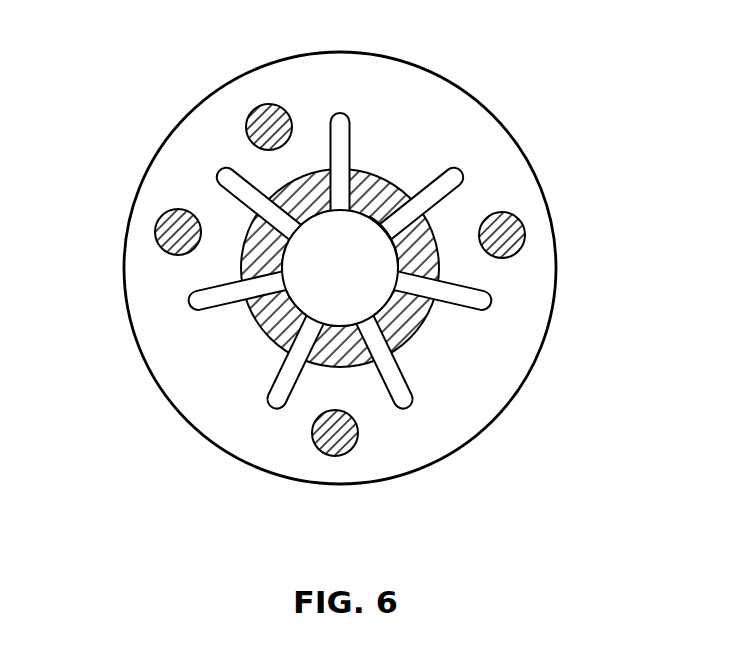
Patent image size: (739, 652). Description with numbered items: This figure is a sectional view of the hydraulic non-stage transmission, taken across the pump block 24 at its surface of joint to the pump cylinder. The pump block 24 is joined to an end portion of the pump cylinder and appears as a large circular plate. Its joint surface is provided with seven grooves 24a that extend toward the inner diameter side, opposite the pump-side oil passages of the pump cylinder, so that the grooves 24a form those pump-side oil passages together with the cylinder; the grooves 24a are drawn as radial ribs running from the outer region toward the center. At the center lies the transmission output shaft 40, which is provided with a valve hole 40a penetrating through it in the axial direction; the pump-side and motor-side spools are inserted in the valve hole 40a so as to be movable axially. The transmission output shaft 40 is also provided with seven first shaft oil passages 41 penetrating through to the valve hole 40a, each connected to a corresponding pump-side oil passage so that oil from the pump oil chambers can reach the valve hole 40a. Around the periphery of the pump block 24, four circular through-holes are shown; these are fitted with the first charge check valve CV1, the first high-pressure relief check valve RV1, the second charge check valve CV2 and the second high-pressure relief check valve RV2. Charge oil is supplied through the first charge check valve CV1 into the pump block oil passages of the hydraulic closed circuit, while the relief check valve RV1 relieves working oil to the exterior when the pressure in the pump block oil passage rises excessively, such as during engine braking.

The pump block 24 is at (438, 88).
The grooves 24a is at (465, 180).
The first high-pressure relief check valve RV1 is at (248, 117).
The second high-pressure relief check valve RV2 is at (519, 252).
The first charge check valve CV1 is at (348, 438).
The second cylinder-side valve port CV2 is at (168, 210).
The transmission output shaft 40 is at (266, 322).
The valve hole 40a is at (313, 216).
The first shaft oil passages 41 is at (406, 281).